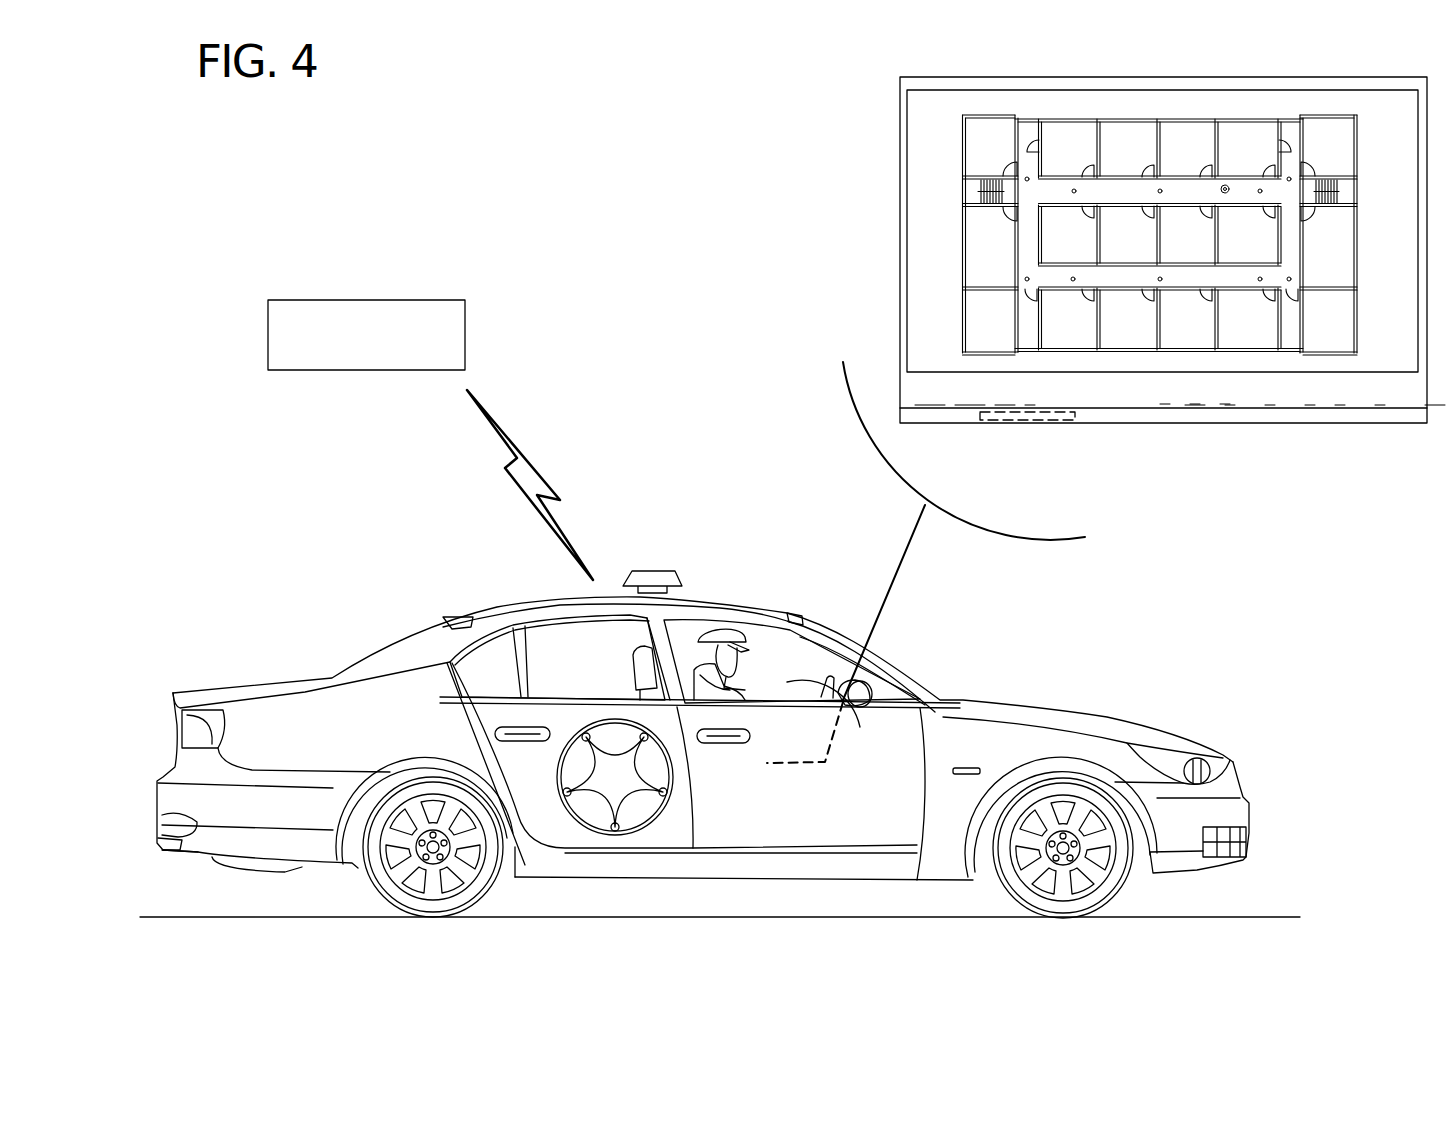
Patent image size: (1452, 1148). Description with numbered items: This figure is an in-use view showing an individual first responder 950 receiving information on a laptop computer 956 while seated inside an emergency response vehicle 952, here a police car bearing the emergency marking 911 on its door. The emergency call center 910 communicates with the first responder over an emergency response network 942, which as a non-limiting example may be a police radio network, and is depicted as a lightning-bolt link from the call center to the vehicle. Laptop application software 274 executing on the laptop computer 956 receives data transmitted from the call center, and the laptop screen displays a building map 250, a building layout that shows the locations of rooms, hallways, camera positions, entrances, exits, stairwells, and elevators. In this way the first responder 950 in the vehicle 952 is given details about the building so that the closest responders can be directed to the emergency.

The building map 250 is at (963, 150).
The laptop application software 274 is at (1025, 421).
The emergency call center 910 is at (465, 332).
The police vehicle marking 911 is at (296, 764).
The emergency response network 942 is at (520, 451).
The individual first responder 950 is at (716, 625).
The emergency response vehicle 952 is at (703, 744).
The laptop computer 956 is at (798, 766).